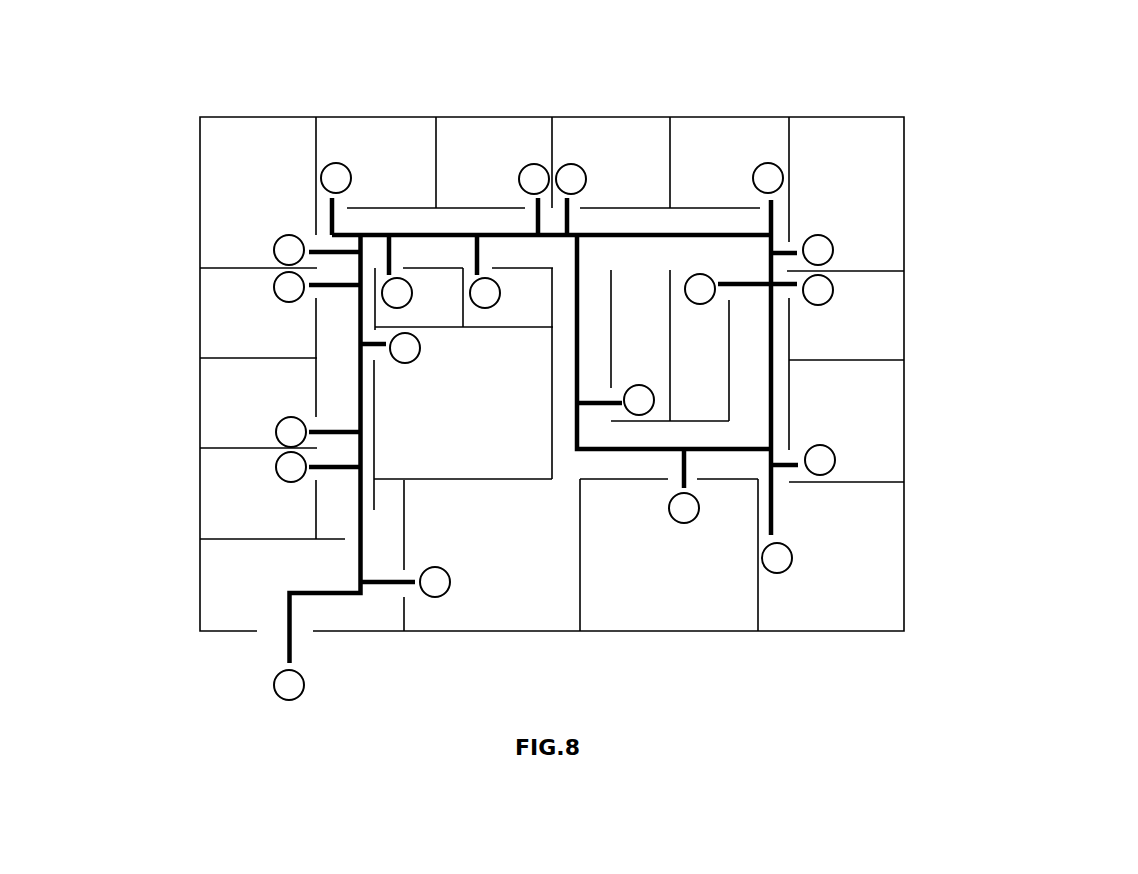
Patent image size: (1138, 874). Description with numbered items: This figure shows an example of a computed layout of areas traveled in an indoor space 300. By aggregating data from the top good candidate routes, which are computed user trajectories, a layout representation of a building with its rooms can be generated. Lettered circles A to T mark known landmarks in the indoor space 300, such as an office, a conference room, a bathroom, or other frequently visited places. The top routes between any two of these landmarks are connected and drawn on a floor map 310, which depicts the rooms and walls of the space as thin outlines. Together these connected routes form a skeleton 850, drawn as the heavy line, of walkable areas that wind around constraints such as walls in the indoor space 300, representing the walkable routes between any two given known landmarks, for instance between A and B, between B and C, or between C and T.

The indoor space 300 is at (1121, 40).
The floor map 310 is at (774, 650).
The skeleton 850 is at (357, 365).